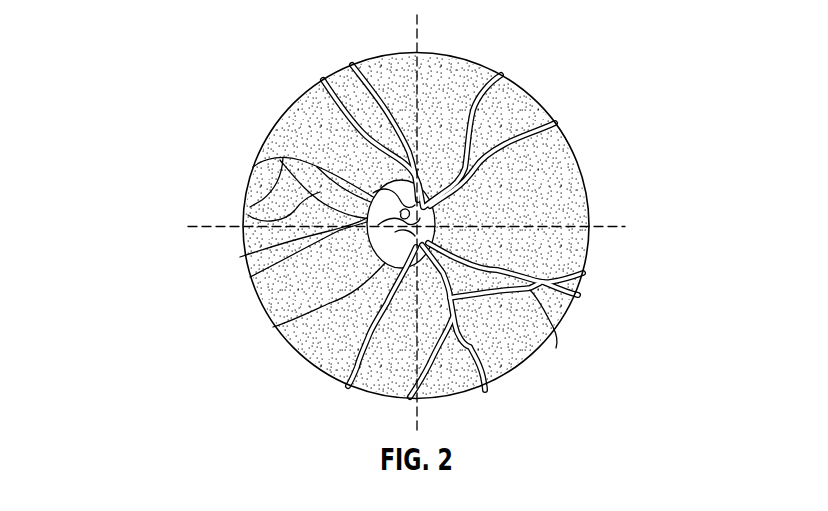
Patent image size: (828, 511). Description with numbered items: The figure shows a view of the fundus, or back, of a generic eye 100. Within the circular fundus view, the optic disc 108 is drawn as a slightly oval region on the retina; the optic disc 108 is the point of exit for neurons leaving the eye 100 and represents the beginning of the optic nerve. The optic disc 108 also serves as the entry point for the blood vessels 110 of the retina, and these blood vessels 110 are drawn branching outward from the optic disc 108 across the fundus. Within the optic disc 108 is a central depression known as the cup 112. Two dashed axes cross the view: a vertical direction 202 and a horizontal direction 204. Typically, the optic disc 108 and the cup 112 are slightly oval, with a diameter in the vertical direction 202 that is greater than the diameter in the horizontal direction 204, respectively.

The eye 100 is at (137, 52).
The optic disc 108 is at (280, 160).
The blood vessels 110 is at (487, 75).
The cup 112 is at (367, 235).
The vertical direction 202 is at (413, 38).
The horizontal direction 204 is at (607, 227).